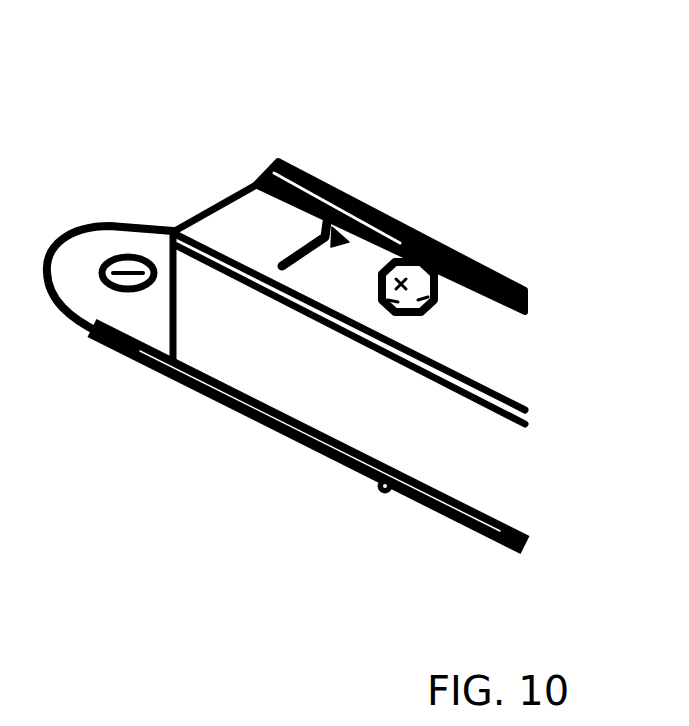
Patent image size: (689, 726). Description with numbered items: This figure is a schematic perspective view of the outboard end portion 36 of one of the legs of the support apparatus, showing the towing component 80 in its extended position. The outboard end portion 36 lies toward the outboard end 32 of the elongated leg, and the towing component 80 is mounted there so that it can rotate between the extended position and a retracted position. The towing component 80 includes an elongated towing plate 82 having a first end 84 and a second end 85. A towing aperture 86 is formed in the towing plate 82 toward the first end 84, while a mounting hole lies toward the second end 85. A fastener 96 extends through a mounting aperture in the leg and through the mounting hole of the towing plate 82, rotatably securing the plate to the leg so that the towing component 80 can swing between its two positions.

The towing component 80 is at (273, 110).
The towing plate 82 is at (150, 324).
The first end 84 is at (60, 246).
The towing aperture 86 is at (103, 284).
The outboard end 32 is at (213, 200).
The outboard end portion 36 is at (505, 548).
The second end 85 is at (398, 497).
The fastener 96 is at (440, 248).